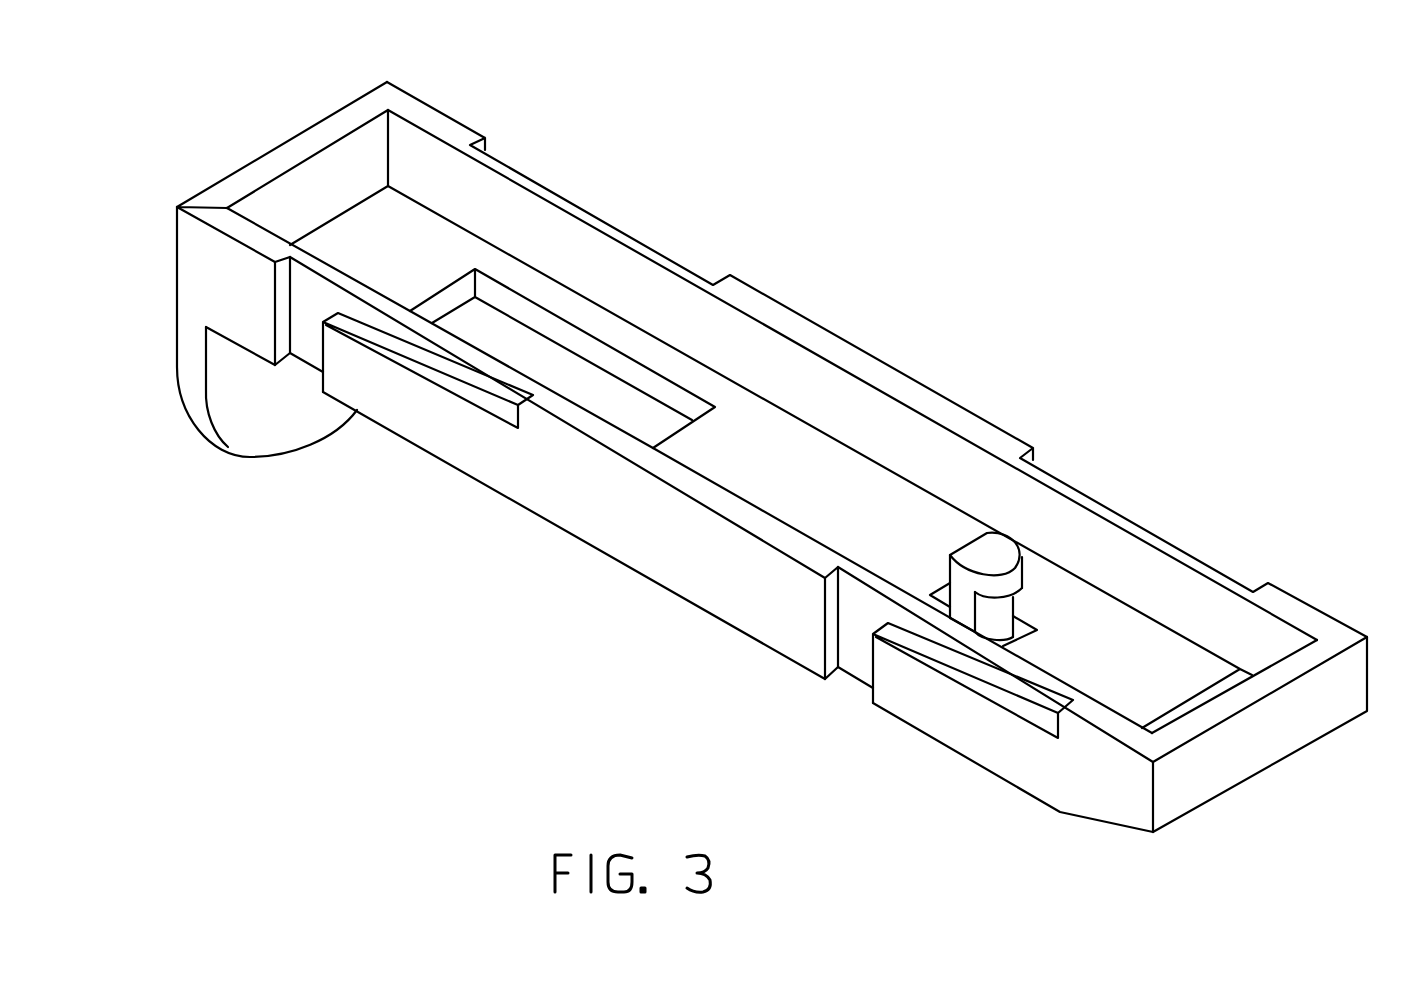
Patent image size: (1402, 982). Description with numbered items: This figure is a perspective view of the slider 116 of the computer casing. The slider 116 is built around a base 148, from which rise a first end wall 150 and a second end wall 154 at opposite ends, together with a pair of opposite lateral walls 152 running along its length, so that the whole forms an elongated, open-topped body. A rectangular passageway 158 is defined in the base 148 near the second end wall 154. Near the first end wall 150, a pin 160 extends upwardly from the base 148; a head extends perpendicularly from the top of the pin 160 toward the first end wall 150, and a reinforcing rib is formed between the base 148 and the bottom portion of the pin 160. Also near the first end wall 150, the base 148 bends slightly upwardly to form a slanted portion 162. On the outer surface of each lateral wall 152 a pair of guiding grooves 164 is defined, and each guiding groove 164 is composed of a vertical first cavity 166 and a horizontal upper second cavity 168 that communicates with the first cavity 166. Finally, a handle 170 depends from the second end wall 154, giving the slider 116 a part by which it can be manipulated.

The slider 116 is at (947, 221).
The base 148 is at (753, 447).
The first end wall 150 is at (1263, 741).
The lateral walls 152 is at (533, 208).
The second end wall 154 is at (342, 167).
The rectangular passageway 158 is at (472, 325).
The pin 160 is at (993, 562).
The slanted portion 162 is at (1100, 800).
The guiding grooves 164 is at (322, 287).
The first cavity 166 is at (315, 347).
The second cavity 168 is at (477, 378).
The handle 170 is at (278, 435).